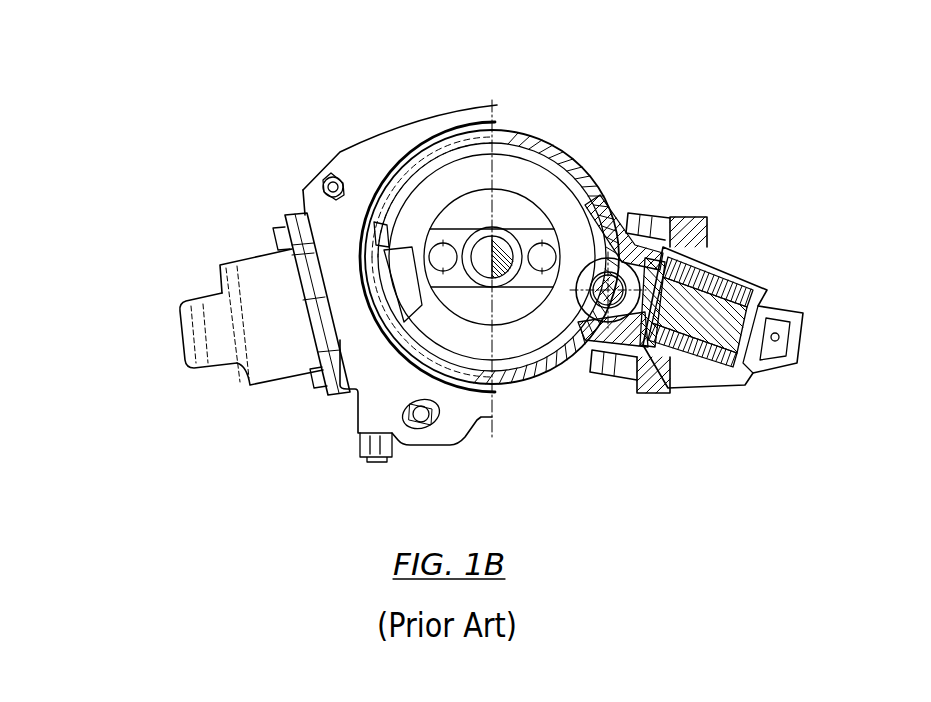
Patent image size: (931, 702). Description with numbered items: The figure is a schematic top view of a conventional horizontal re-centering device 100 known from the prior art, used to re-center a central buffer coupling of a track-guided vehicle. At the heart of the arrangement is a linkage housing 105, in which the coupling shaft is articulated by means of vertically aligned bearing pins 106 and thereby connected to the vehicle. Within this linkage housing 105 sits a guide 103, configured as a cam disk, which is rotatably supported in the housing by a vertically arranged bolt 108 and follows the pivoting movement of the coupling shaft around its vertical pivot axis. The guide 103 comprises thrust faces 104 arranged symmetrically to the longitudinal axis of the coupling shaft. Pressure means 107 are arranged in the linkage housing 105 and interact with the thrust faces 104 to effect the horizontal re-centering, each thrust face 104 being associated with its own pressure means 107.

The horizontal re-centering device 100 is at (390, 87).
The guide 103 is at (547, 192).
The thrust faces 104 is at (590, 217).
The linkage housing 105 is at (370, 165).
The bearing pins 106 is at (500, 247).
The bolt 108 is at (500, 247).
The pressure means 107 is at (235, 273).